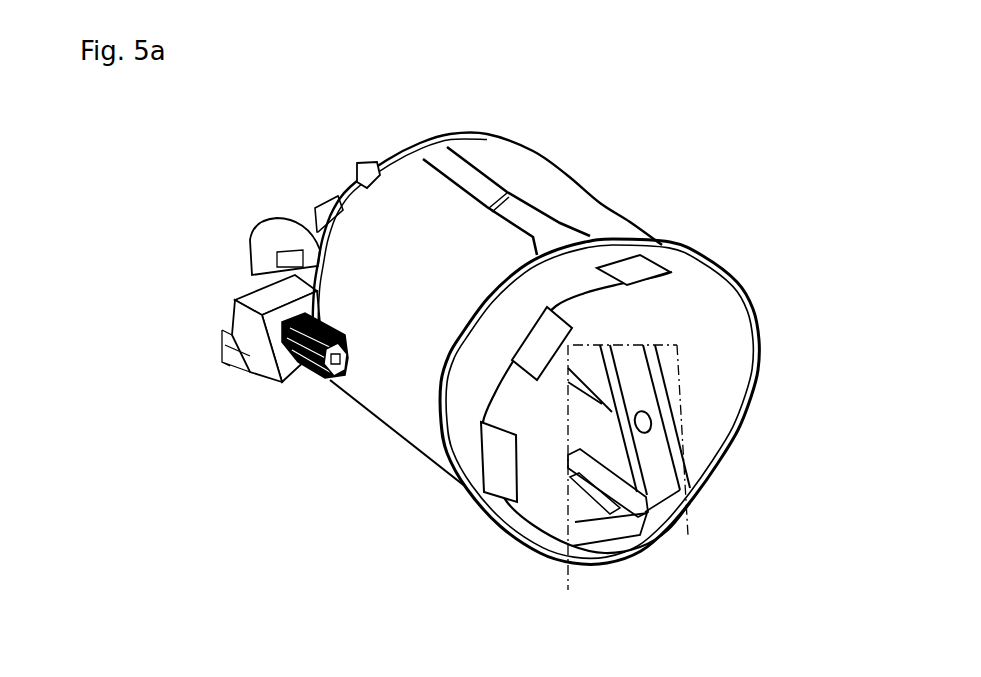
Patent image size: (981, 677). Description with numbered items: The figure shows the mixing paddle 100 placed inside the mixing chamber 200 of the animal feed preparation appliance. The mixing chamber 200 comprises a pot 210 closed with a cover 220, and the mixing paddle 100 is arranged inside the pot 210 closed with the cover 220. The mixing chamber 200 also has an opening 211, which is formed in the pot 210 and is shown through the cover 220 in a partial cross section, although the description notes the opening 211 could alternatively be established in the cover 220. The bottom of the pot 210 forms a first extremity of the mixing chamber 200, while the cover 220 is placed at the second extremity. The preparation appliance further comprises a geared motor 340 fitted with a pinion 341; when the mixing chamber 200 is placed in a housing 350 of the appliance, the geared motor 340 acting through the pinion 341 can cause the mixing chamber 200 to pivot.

The mixing paddle 100 is at (663, 490).
The mixing chamber 200 is at (757, 1).
The pot 210 is at (553, 250).
The opening 211 is at (604, 522).
The cover 220 is at (640, 273).
The geared motor 340 is at (258, 295).
The pinion 341 is at (298, 365).
The housing 350 is at (390, 230).